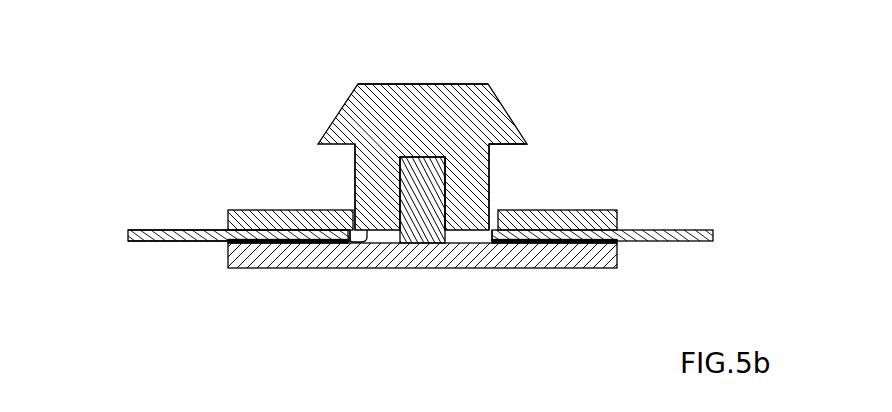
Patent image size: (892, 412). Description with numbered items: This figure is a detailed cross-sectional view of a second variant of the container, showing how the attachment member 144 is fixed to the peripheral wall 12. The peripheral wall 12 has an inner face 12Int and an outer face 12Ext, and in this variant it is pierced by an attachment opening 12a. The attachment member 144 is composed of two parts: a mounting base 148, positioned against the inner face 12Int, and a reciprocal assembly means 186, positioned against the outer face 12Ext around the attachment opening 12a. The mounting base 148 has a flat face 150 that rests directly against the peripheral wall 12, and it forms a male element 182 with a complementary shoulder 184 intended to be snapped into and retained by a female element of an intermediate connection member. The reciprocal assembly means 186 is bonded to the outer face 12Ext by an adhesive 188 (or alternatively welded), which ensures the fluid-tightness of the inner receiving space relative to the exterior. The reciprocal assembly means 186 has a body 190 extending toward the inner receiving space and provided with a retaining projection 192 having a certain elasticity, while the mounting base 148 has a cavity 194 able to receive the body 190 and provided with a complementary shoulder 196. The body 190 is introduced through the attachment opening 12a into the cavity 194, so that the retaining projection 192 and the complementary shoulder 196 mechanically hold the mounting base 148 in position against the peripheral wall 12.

The peripheral wall 12 is at (660, 230).
The inner face of the peripheral wall 12Int is at (170, 230).
The outer face of the peripheral wall 12Ext is at (197, 242).
The attachment opening 12a is at (492, 232).
The attachment member 144 is at (412, 126).
The mounting base 148 is at (594, 212).
The flat face 150 is at (345, 232).
The male element 182 is at (458, 112).
The complementary shoulder 184 is at (517, 157).
The reciprocal assembly means 186 is at (582, 262).
The adhesive 188 is at (302, 243).
The body 190 is at (418, 235).
The retaining projection 192 is at (449, 212).
The cavity 194 is at (428, 150).
The complementary shoulder 196 is at (390, 205).